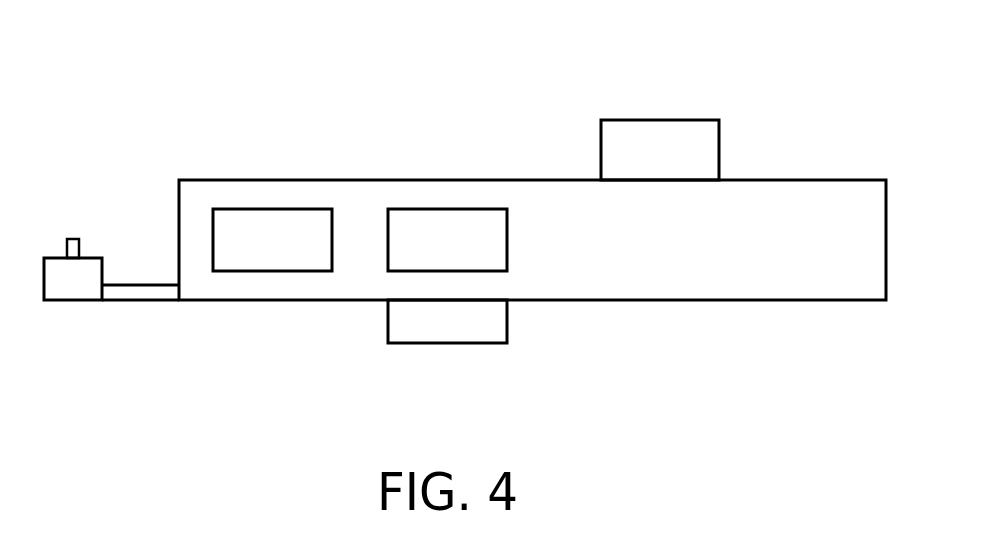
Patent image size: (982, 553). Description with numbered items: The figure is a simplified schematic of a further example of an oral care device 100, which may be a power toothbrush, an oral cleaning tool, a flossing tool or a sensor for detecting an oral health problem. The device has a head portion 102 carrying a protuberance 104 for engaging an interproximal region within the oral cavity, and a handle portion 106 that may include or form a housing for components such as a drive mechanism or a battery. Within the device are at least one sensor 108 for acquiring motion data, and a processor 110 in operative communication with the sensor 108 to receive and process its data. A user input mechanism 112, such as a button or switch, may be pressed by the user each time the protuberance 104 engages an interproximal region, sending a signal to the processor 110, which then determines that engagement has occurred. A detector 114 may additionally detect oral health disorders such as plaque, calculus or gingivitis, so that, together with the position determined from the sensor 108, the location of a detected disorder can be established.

The oral care device 100 is at (112, 70).
The head portion 102 is at (43, 278).
The protuberance 104 is at (75, 238).
The handle portion 106 is at (765, 300).
The sensor 108 is at (270, 209).
The processor 110 is at (444, 209).
The user input mechanism 112 is at (658, 120).
The detector 114 is at (447, 343).